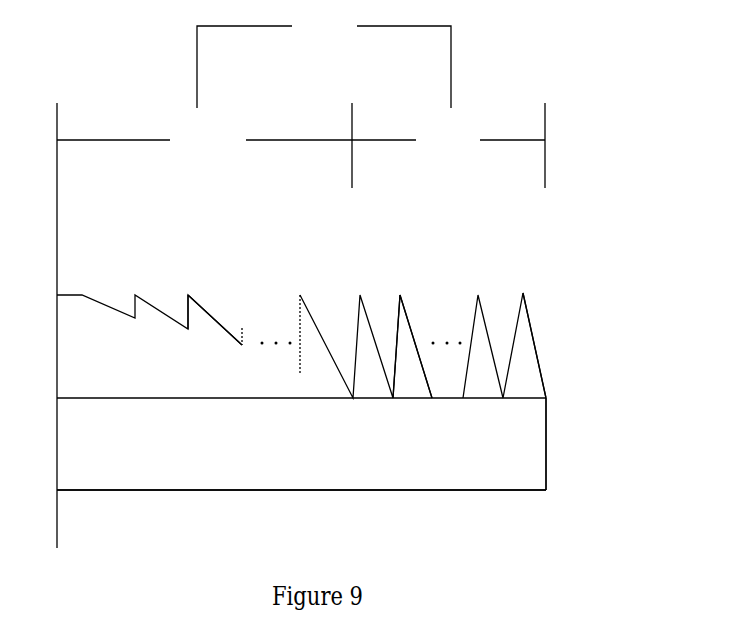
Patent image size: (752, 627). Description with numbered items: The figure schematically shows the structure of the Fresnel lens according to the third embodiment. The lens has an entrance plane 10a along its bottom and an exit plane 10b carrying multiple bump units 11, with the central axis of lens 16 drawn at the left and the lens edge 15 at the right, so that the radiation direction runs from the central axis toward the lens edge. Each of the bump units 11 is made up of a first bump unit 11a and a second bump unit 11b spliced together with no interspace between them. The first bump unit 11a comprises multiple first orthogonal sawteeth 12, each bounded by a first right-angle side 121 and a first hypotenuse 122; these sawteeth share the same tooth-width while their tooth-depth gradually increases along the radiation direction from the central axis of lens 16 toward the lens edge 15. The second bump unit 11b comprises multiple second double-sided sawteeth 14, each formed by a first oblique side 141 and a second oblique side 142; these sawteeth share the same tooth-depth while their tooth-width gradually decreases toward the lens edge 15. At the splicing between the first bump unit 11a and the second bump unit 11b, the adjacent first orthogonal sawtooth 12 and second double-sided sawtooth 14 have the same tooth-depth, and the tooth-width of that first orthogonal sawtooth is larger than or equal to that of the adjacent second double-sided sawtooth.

The bump units 11 is at (324, 56).
The first bump unit 11a is at (204, 145).
The second bump unit 11b is at (448, 145).
The first orthogonal sawteeth 12 is at (197, 305).
The first right-angle side 121 is at (187, 307).
The first hypotenuse 122 is at (208, 312).
The second double-sided sawteeth 14 is at (405, 340).
The first oblique side 141 is at (398, 327).
The second oblique side 142 is at (410, 337).
The entrance plane 10a is at (377, 491).
The exit plane 10b is at (546, 356).
The lens edge 15 is at (546, 443).
The central axis of lens 16 is at (57, 505).